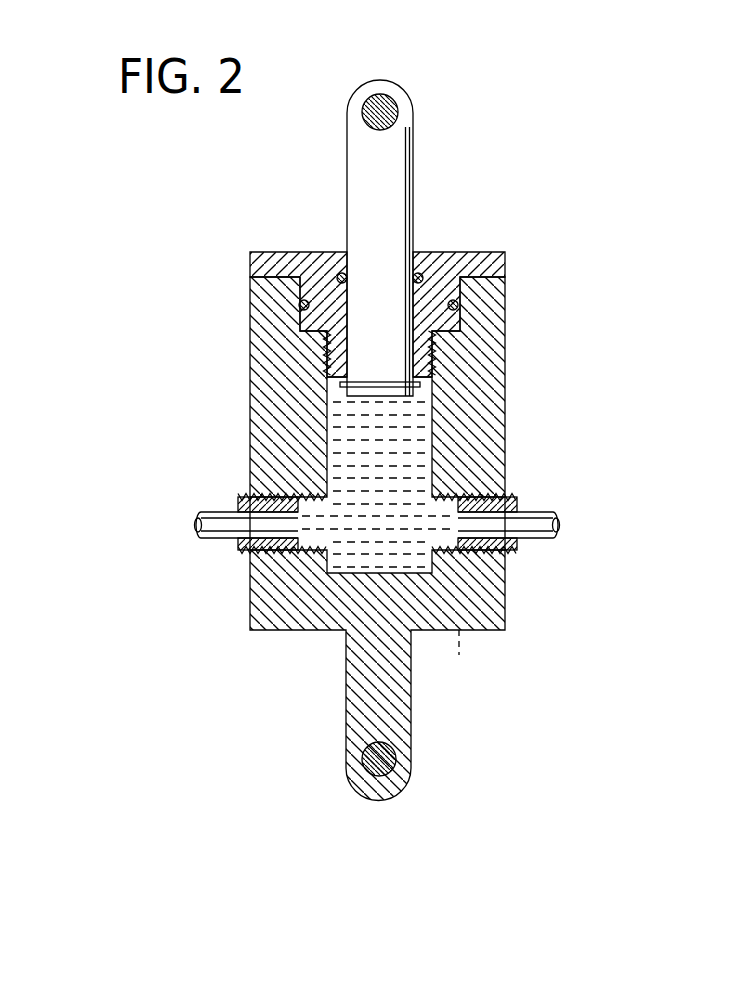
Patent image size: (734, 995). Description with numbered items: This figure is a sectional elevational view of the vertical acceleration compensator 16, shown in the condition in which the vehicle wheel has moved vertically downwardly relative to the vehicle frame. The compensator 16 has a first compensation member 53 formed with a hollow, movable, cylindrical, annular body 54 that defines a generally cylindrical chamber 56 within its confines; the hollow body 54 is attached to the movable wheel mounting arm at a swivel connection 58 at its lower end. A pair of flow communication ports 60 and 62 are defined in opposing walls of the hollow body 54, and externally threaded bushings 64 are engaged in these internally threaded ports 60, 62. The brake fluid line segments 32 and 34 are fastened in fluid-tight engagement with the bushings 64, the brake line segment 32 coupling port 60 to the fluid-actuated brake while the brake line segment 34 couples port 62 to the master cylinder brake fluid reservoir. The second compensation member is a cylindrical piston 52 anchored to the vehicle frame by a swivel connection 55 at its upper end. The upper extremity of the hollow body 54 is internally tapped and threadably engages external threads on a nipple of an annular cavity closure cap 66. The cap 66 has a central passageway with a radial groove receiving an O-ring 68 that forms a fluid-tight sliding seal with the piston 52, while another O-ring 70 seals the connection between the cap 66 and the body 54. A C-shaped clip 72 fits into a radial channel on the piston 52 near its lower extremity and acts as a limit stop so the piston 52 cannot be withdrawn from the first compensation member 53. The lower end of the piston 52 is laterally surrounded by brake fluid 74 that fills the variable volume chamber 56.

The vertical acceleration compensator 16 is at (259, 772).
The brake fluid line segment 32 is at (535, 517).
The brake fluid line segment 34 is at (218, 517).
The piston 52 is at (392, 203).
The first compensation member 53 is at (276, 643).
The hollow cylindrical body 54 is at (510, 400).
The swivel connection 55 is at (397, 103).
The chamber 56 is at (412, 452).
The swivel connection 58 is at (400, 763).
The flow communication port 60 is at (474, 662).
The flow communication port 62 is at (300, 490).
The externally threaded bushing 64 is at (243, 548).
The annular cavity closure cap 66 is at (458, 250).
The O-ring 68 is at (344, 280).
The O-ring 70 is at (458, 303).
The C-shaped clip 72 is at (397, 377).
The brake fluid 74 is at (348, 427).